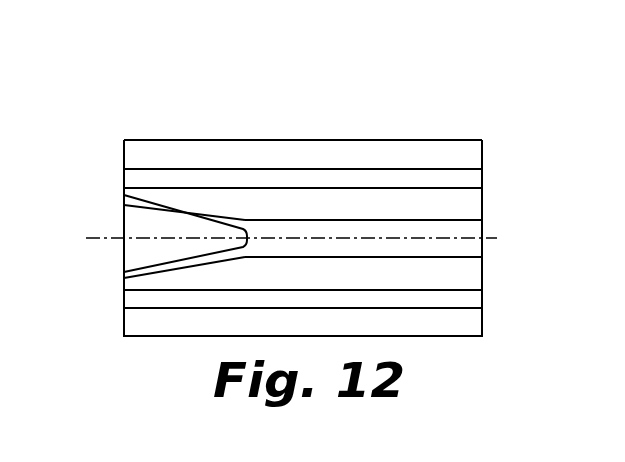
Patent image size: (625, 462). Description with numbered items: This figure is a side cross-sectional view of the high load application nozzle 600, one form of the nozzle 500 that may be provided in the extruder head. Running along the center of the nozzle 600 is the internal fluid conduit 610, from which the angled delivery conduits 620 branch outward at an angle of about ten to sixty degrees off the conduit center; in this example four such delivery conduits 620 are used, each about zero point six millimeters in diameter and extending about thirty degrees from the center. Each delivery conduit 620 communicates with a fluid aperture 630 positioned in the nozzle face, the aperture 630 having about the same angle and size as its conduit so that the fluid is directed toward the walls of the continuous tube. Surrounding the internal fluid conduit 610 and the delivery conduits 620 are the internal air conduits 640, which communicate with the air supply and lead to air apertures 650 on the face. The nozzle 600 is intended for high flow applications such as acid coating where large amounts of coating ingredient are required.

The nozzle 500 is at (147, 99).
The high load application nozzle 600 is at (211, 134).
The internal fluid conduit 610 is at (366, 223).
The angled delivery conduit 620 is at (158, 263).
The fluid aperture 630 is at (130, 208).
The internal air conduit 640 is at (291, 173).
The air aperture 650 is at (124, 176).